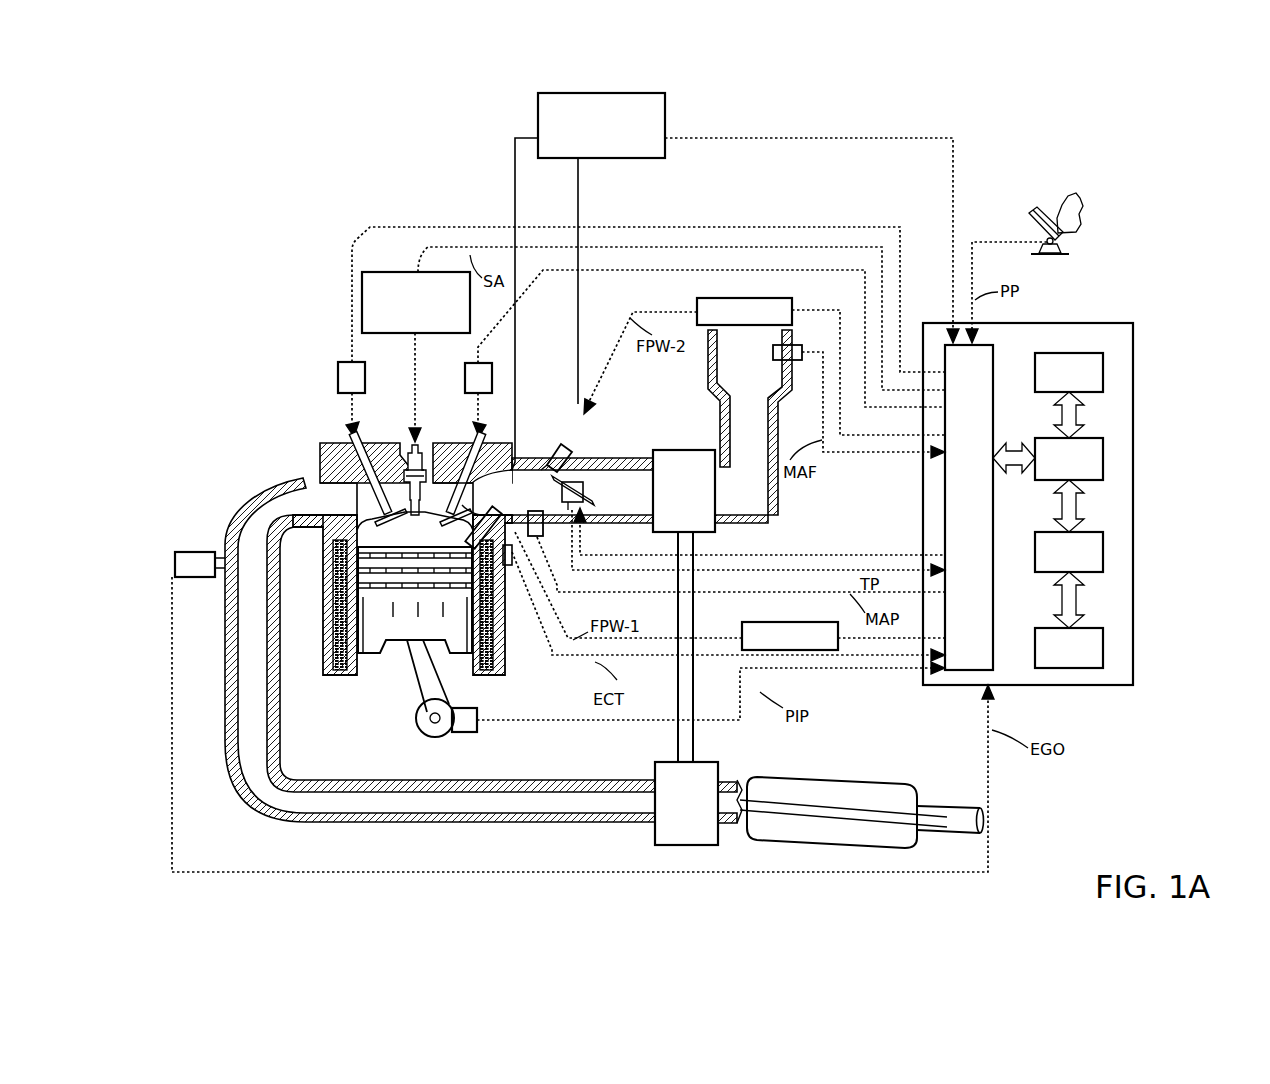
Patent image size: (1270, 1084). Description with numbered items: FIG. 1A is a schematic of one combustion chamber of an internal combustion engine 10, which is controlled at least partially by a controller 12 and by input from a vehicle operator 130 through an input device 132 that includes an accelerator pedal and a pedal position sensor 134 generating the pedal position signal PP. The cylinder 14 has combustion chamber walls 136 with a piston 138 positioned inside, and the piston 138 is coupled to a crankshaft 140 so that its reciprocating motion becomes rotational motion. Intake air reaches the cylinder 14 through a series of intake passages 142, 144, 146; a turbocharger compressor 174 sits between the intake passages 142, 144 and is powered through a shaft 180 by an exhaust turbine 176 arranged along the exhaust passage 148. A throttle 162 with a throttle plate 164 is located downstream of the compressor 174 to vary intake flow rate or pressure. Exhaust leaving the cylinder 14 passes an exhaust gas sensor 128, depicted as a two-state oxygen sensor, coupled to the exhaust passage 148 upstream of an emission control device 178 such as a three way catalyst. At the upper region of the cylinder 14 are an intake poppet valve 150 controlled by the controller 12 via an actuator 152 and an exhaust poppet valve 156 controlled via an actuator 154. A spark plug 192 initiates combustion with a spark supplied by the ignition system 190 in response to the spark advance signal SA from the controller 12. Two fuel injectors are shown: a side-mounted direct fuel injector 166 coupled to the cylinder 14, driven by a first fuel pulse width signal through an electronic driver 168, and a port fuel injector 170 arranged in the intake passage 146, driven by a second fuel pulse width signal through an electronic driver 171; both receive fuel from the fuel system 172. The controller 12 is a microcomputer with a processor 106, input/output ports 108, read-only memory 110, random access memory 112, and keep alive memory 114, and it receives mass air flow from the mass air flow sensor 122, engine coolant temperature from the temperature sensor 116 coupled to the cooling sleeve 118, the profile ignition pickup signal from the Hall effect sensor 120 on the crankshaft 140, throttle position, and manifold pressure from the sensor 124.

The internal combustion engine 10 is at (258, 400).
The controller 12 is at (1067, 494).
The cylinder 14 is at (340, 535).
The processor 106 is at (1103, 452).
The input/output ports 108 is at (995, 350).
The read-only memory 110 is at (1103, 372).
The random access memory 112 is at (1103, 550).
The keep alive memory 114 is at (1103, 646).
The temperature sensor 116 is at (512, 567).
The cooling sleeve 118 is at (503, 650).
The Hall effect sensor 120 is at (470, 735).
The mass air flow sensor 122 is at (790, 345).
The manifold pressure sensor 124 is at (560, 565).
The exhaust gas sensor 128 is at (175, 556).
The vehicle operator 130 is at (1070, 219).
The input device 132 is at (1030, 216).
The pedal position sensor 134 is at (1058, 242).
The combustion chamber walls 136 is at (413, 617).
The piston 138 is at (398, 627).
The crankshaft 140 is at (425, 735).
The intake passage 142 is at (761, 374).
The intake passage 144 is at (636, 501).
The intake passage 146 is at (551, 501).
The exhaust passage 148 is at (310, 509).
The intake poppet valve 150 is at (444, 498).
The actuator 152 is at (465, 375).
The actuator 154 is at (338, 368).
The exhaust poppet valve 156 is at (320, 466).
The throttle 162 is at (570, 477).
The throttle plate 164 is at (565, 469).
The fuel injector 166 is at (483, 524).
The electronic driver 168 is at (742, 628).
The fuel injector 170 is at (554, 441).
The electronic driver 171 is at (697, 303).
The fuel system 172 is at (667, 99).
The compressor 174 is at (668, 450).
The exhaust turbine 176 is at (655, 833).
The emission control device 178 is at (830, 778).
The shaft 180 is at (696, 732).
The ignition system 190 is at (372, 272).
The spark plug 192 is at (405, 465).